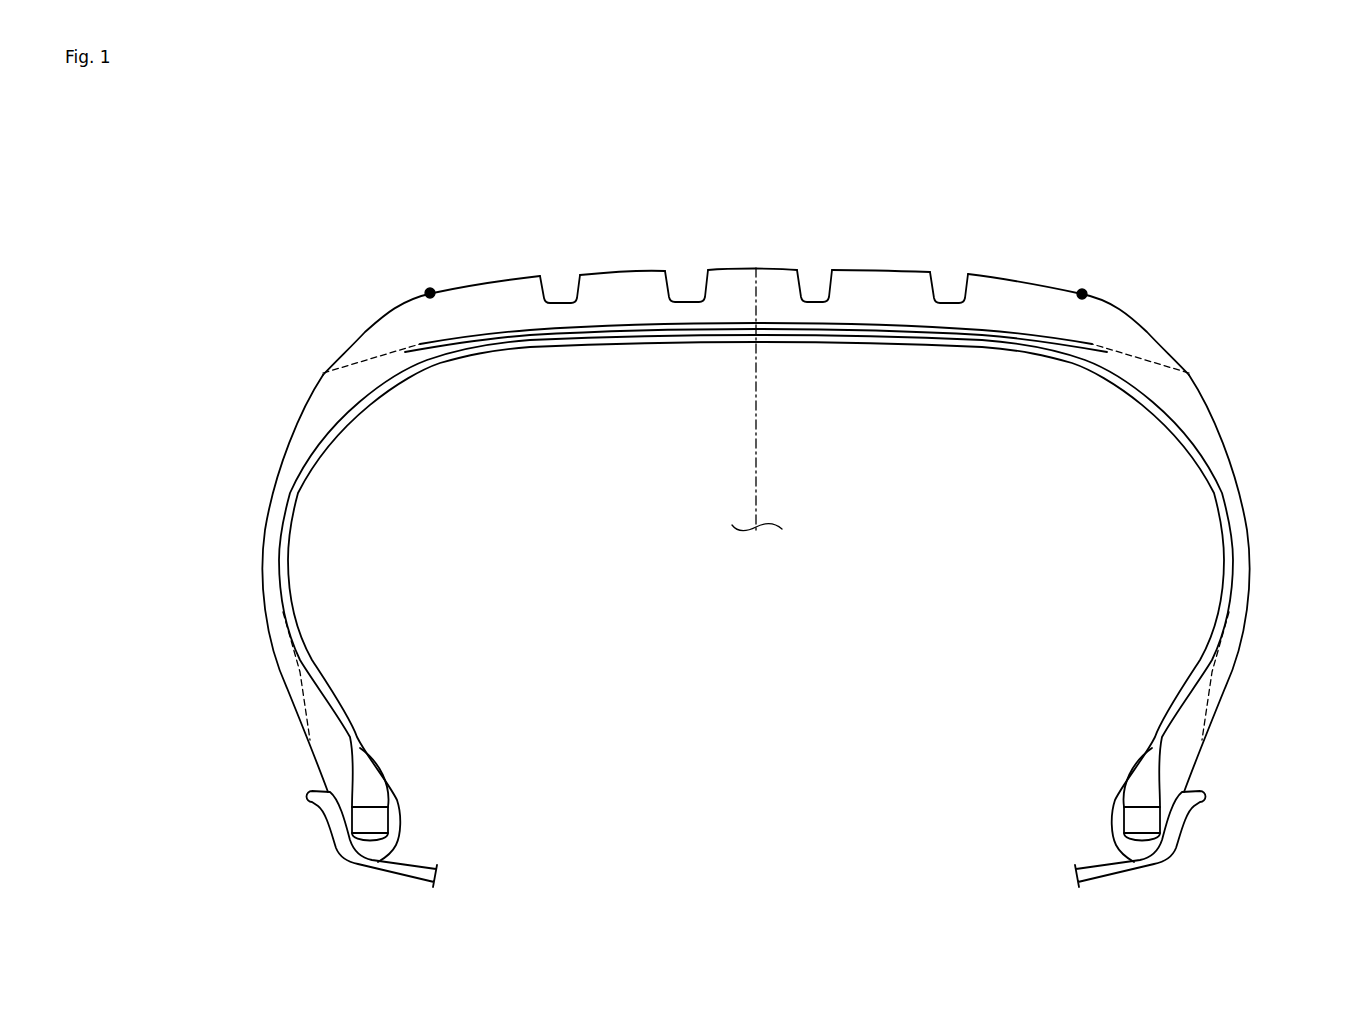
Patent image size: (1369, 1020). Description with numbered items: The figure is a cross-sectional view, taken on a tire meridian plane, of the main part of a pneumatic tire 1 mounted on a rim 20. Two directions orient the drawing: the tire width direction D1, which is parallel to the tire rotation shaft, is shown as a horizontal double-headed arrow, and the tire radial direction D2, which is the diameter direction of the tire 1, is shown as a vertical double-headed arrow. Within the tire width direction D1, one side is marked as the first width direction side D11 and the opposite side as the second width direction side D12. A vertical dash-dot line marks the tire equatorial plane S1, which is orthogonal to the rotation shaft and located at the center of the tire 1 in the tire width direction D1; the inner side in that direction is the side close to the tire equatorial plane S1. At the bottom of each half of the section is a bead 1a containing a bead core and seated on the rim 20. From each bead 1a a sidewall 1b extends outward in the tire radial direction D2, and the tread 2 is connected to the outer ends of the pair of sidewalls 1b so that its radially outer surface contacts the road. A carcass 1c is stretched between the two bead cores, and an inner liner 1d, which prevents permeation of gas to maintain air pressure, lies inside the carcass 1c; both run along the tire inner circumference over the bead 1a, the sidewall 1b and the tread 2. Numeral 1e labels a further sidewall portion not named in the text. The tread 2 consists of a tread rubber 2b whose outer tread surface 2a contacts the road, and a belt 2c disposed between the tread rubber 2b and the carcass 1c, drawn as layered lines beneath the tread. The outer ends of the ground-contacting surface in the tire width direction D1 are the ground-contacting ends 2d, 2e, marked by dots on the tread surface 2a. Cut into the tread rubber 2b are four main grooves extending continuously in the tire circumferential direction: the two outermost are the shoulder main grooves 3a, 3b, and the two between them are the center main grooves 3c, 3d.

The pneumatic tire 1 is at (763, 513).
The bead 1a is at (293, 777).
The sidewall 1b is at (263, 445).
The carcass 1c is at (520, 350).
The inner liner 1d is at (900, 350).
The carcass ply 1e is at (273, 527).
The tread 2 is at (640, 257).
The tread surface 2a is at (500, 280).
The tread rubber 2b is at (875, 258).
The belt 2c is at (635, 325).
The ground-contacting end 2d is at (430, 289).
The ground-contacting end 2e is at (1082, 290).
The shoulder main groove 3a is at (565, 264).
The shoulder main groove 3b is at (955, 261).
The center main groove 3c is at (691, 259).
The center main groove 3d is at (818, 259).
The rim 20 is at (377, 872).
The tire equatorial plane S1 is at (757, 472).
The tire width direction D1 is at (808, 787).
The tire radial direction D2 is at (757, 857).
The first width direction side D11 is at (373, 210).
The second width direction side D12 is at (1135, 210).